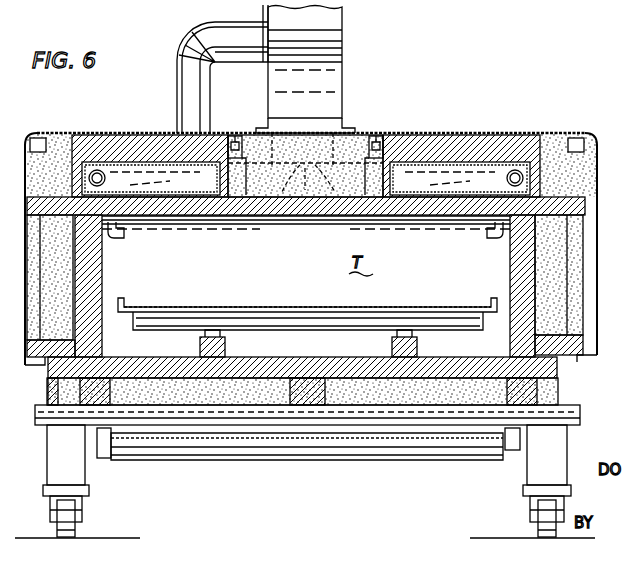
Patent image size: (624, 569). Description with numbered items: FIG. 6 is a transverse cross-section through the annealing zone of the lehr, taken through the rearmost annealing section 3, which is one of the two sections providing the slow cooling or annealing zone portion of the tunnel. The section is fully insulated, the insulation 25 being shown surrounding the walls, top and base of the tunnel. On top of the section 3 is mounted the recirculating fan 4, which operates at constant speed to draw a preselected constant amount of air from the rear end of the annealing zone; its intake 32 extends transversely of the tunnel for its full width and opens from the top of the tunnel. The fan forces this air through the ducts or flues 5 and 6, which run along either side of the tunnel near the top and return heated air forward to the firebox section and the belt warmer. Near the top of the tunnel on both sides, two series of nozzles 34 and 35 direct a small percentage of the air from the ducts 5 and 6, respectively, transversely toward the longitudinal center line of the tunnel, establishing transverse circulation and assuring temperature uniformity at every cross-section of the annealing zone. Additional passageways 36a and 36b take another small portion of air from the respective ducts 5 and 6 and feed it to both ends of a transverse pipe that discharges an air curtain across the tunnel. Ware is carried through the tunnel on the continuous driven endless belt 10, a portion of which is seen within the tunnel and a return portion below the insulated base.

The section 3 is at (452, 130).
The recirculating fan 4 is at (330, 30).
The duct or flue 5 is at (192, 222).
The duct or flue 6 is at (400, 216).
The endless belt 10 is at (268, 307).
The insulation 25 is at (56, 142).
The intake 32 is at (340, 160).
The nozzles 34 is at (124, 235).
The nozzles 35 is at (486, 234).
The passageway 36a is at (97, 170).
The passageway 36b is at (515, 170).